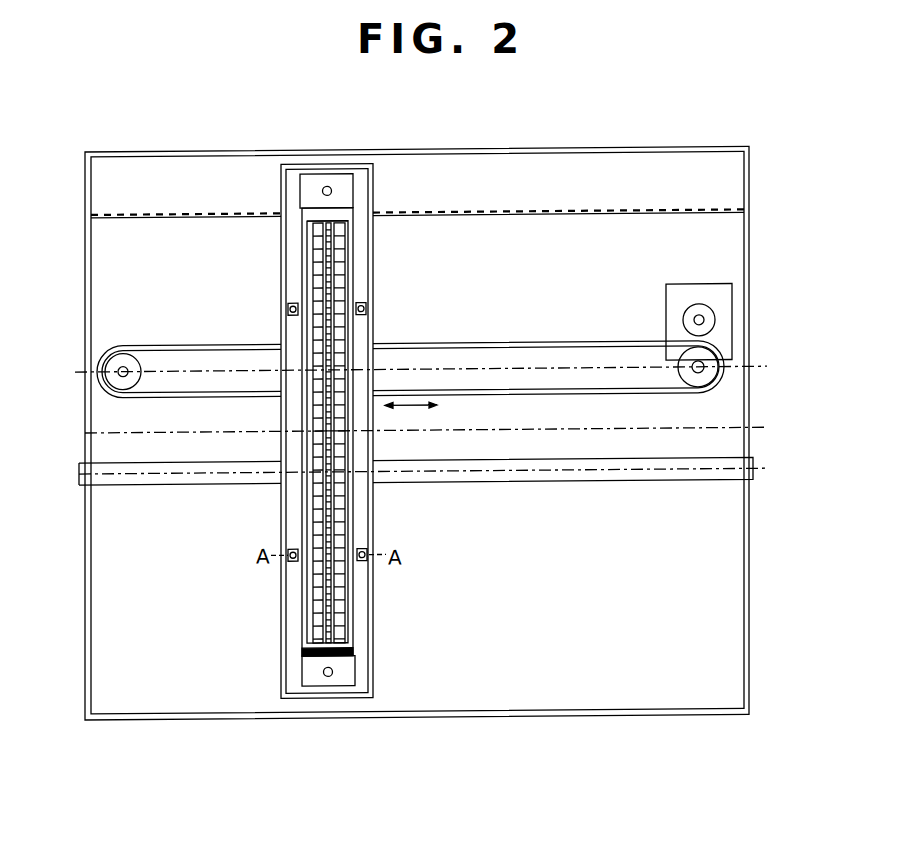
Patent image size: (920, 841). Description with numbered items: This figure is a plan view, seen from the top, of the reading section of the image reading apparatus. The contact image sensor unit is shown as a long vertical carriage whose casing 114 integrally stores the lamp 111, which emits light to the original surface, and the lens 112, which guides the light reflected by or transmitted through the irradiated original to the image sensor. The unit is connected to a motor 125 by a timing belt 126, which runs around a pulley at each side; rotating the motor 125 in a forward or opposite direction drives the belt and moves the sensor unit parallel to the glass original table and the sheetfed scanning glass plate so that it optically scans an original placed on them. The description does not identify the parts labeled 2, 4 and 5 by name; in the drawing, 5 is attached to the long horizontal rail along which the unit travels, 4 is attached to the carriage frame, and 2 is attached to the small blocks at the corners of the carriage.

The guide blocks 2 is at (293, 306).
The carriage 4 is at (303, 693).
The guide rail 5 is at (682, 485).
The lamp 111 is at (321, 223).
The lens 112 is at (330, 221).
The casing 114 is at (337, 684).
The motor 125 is at (715, 303).
The timing belt 126 is at (632, 400).